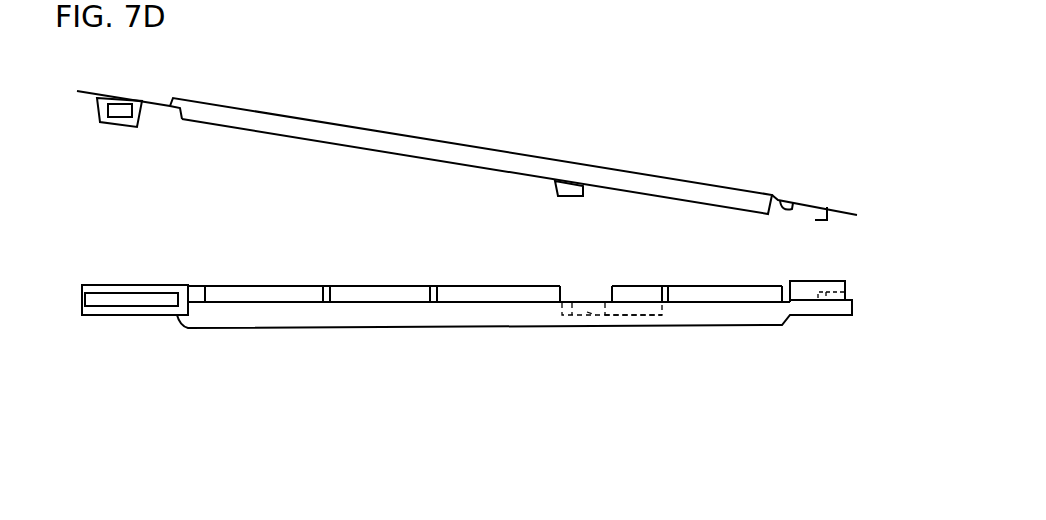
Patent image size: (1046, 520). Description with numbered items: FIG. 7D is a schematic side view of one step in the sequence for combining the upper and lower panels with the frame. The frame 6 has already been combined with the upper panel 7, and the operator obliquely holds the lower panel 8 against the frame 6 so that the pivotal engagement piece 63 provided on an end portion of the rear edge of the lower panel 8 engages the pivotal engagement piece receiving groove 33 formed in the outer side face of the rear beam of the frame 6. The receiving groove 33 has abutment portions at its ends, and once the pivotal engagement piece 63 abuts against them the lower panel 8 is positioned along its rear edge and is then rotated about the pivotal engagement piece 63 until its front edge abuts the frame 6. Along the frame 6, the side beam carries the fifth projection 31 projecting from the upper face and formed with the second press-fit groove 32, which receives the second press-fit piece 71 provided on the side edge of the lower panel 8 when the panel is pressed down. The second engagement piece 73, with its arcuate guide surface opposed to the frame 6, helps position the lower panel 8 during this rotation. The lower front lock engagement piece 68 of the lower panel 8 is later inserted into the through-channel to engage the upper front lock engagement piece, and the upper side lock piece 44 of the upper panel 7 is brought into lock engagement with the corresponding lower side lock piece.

The lower panel 8 is at (806, 187).
The lower front lock engagement piece 68 is at (112, 123).
The second press-fit piece 71 is at (570, 191).
The second engagement piece 73 is at (788, 211).
The pivotal engagement piece 63 is at (846, 272).
The upper panel 7 is at (713, 315).
The upper side lock piece 44 is at (260, 295).
The frame 6 is at (388, 295).
The second press-fit groove 32 is at (602, 323).
The fifth projection 31 is at (650, 323).
The pivotal engagement piece receiving groove 33 is at (843, 307).